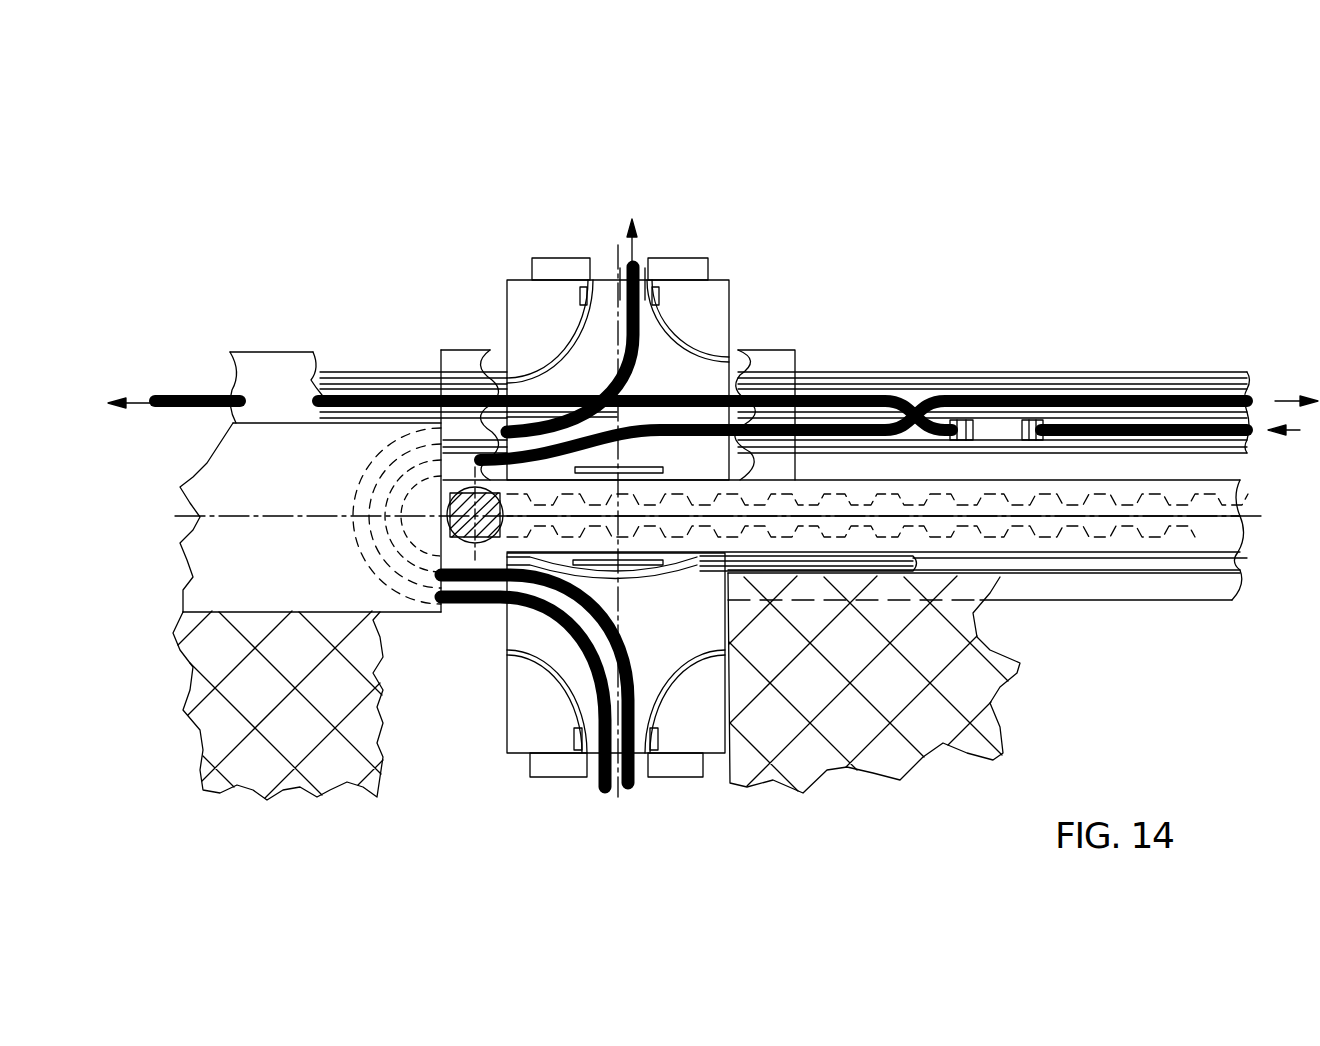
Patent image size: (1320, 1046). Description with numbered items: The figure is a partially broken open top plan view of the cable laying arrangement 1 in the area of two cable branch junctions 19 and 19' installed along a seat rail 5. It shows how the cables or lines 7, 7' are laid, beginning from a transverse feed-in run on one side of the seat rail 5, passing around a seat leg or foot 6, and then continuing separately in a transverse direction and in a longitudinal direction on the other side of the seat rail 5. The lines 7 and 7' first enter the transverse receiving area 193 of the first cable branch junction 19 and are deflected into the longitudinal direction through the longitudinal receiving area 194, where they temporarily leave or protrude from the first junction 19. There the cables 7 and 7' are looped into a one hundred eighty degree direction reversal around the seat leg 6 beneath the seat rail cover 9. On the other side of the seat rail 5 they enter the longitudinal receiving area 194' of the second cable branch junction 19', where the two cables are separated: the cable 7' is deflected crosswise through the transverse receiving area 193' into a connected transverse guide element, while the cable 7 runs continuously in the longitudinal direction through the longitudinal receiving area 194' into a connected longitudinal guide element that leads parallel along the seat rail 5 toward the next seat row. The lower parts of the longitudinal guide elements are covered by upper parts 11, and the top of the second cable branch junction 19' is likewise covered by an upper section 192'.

The cable laying arrangement 1 is at (434, 234).
The seat rail 5 is at (1110, 540).
The seat leg 6 is at (450, 547).
The cable 7 is at (701, 561).
The cable 7' is at (589, 478).
The seat rail cover 9 is at (183, 557).
The upper part 11 is at (255, 365).
The first cable branch junction 19 is at (565, 715).
The second cable branch junction 19' is at (610, 294).
The upper section 192' is at (835, 379).
The transverse receiving area 193 is at (496, 705).
The transverse receiving area 193' is at (550, 246).
The longitudinal receiving area 194 is at (566, 692).
The longitudinal receiving area 194' is at (753, 300).